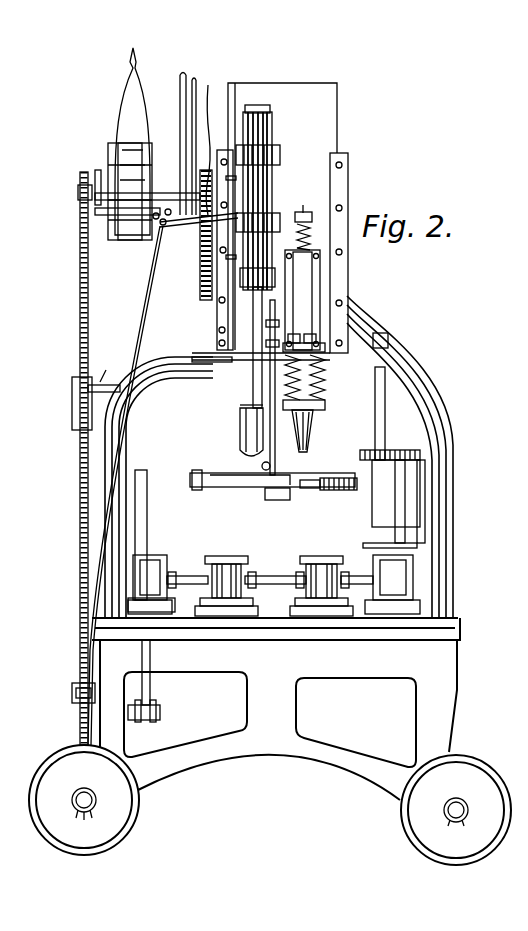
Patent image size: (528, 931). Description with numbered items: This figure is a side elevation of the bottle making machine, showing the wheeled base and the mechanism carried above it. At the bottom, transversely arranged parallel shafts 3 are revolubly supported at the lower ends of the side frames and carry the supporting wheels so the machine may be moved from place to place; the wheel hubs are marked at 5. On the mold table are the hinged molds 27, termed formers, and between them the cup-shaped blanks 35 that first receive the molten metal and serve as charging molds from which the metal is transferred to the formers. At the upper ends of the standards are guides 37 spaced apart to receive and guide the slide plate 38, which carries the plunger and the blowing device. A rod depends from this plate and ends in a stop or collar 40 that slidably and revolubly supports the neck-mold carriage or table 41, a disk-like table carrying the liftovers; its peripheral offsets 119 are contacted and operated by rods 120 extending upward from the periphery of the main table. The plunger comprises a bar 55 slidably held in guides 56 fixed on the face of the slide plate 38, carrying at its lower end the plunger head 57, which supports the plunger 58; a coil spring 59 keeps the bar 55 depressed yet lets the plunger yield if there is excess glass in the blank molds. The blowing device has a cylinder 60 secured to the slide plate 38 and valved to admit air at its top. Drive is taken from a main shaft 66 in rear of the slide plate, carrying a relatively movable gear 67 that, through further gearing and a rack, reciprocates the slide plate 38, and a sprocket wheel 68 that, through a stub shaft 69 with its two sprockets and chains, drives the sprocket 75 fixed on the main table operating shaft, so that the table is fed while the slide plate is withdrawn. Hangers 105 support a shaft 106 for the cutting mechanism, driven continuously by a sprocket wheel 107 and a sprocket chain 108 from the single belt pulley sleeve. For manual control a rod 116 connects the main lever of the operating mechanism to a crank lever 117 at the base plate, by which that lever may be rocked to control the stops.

The shafts 3 is at (92, 806).
The wheel 5 is at (110, 812).
The molds 27 is at (318, 580).
The blanks 35 is at (226, 558).
The guides 37 is at (222, 276).
The slide plate 38 is at (282, 218).
The stop or collar 40 is at (288, 500).
The neck-mold carriage or table 41 is at (228, 480).
The bar 55 is at (305, 288).
The guides 56 is at (322, 305).
The plunger head 57 is at (322, 382).
The plunger 58 is at (312, 432).
The coil spring 59 is at (308, 237).
The cylinder 60 is at (268, 183).
The shaft 66 is at (95, 178).
The gear 67 is at (204, 138).
The sprocket wheel 68 is at (80, 186).
The stub shaft 69 is at (103, 380).
The sprocket 75 is at (80, 708).
The hangers 105 is at (240, 425).
The shaft 106 is at (240, 360).
The sprocket wheel 107 is at (196, 362).
The sprocket chain 108 is at (195, 265).
The rod 116 is at (152, 298).
The crank lever 117 is at (78, 628).
The peripheral offsets 119 is at (160, 503).
The rods 120 is at (150, 478).